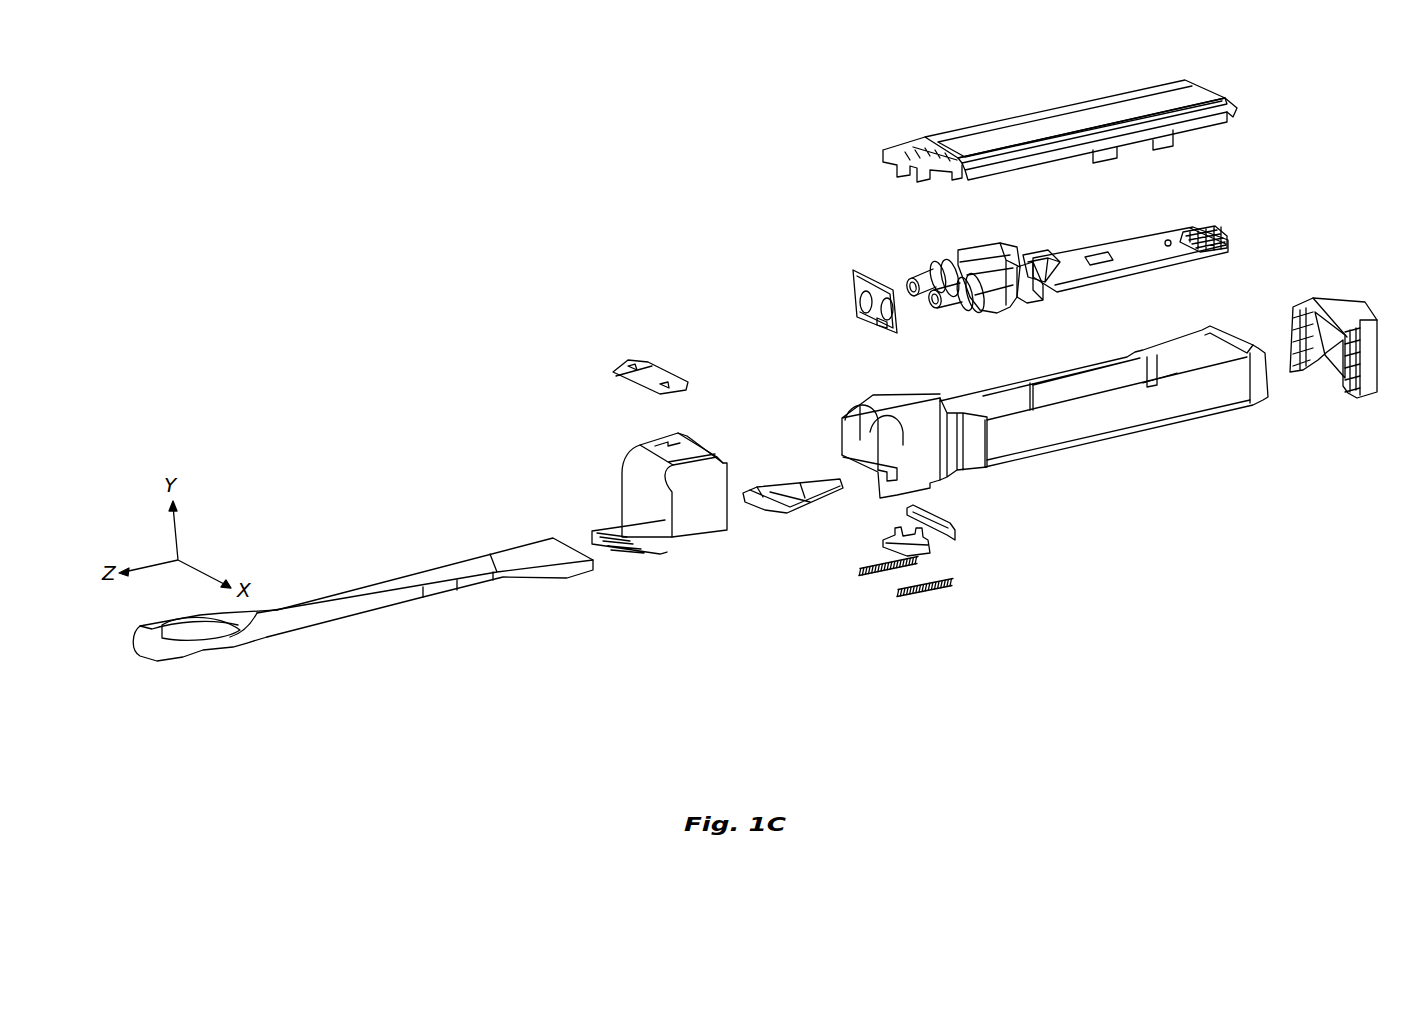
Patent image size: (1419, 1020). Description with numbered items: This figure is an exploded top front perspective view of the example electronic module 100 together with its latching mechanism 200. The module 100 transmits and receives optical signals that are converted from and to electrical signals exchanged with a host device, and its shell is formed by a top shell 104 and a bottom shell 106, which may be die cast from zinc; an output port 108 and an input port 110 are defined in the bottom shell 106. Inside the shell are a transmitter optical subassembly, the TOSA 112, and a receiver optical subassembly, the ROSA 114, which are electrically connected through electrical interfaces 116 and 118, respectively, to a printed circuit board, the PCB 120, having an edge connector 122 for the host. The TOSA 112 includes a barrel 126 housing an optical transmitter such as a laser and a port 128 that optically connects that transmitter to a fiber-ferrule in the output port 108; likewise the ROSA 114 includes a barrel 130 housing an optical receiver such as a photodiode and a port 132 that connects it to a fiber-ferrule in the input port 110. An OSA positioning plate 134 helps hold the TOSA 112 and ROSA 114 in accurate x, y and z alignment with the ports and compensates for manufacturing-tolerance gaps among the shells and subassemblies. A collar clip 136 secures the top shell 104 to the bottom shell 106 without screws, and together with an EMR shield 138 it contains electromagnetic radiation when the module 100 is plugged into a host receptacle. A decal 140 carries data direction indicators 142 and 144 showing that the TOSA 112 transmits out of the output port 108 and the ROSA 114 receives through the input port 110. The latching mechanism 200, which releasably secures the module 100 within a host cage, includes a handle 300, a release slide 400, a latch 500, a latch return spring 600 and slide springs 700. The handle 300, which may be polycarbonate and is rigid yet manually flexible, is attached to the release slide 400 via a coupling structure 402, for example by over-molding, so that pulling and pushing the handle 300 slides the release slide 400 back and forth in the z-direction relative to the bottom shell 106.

The module 100 is at (739, 233).
The top shell 104 is at (1088, 118).
The bottom shell 106 is at (1118, 423).
The output port 108 is at (850, 442).
The input port 110 is at (850, 457).
The transmitter optical subassembly (TOSA) 112 is at (942, 254).
The receiver optical subassembly (ROSA) 114 is at (1012, 316).
The electrical interface 116 is at (1038, 256).
The electrical interface 118 is at (1037, 297).
The printed circuit board (PCB) 120 is at (1168, 240).
The edge connector 122 is at (1252, 247).
The barrel 126 is at (980, 248).
The port 128 is at (909, 287).
The barrel 130 is at (998, 298).
The port 132 is at (931, 302).
The OSA positioning plate 134 is at (853, 280).
The collar clip 136 is at (1338, 312).
The EMR shield 138 is at (945, 540).
The decal 140 is at (627, 382).
The data direction indicator 142 is at (632, 365).
The data direction indicator 144 is at (675, 385).
The latching mechanism 200 is at (907, 672).
The handle 300 is at (537, 580).
The release slide 400 is at (677, 535).
The coupling structure 402 is at (597, 525).
The latch 500 is at (789, 506).
The latch return spring 600 is at (883, 552).
The slide springs 700 is at (900, 597).